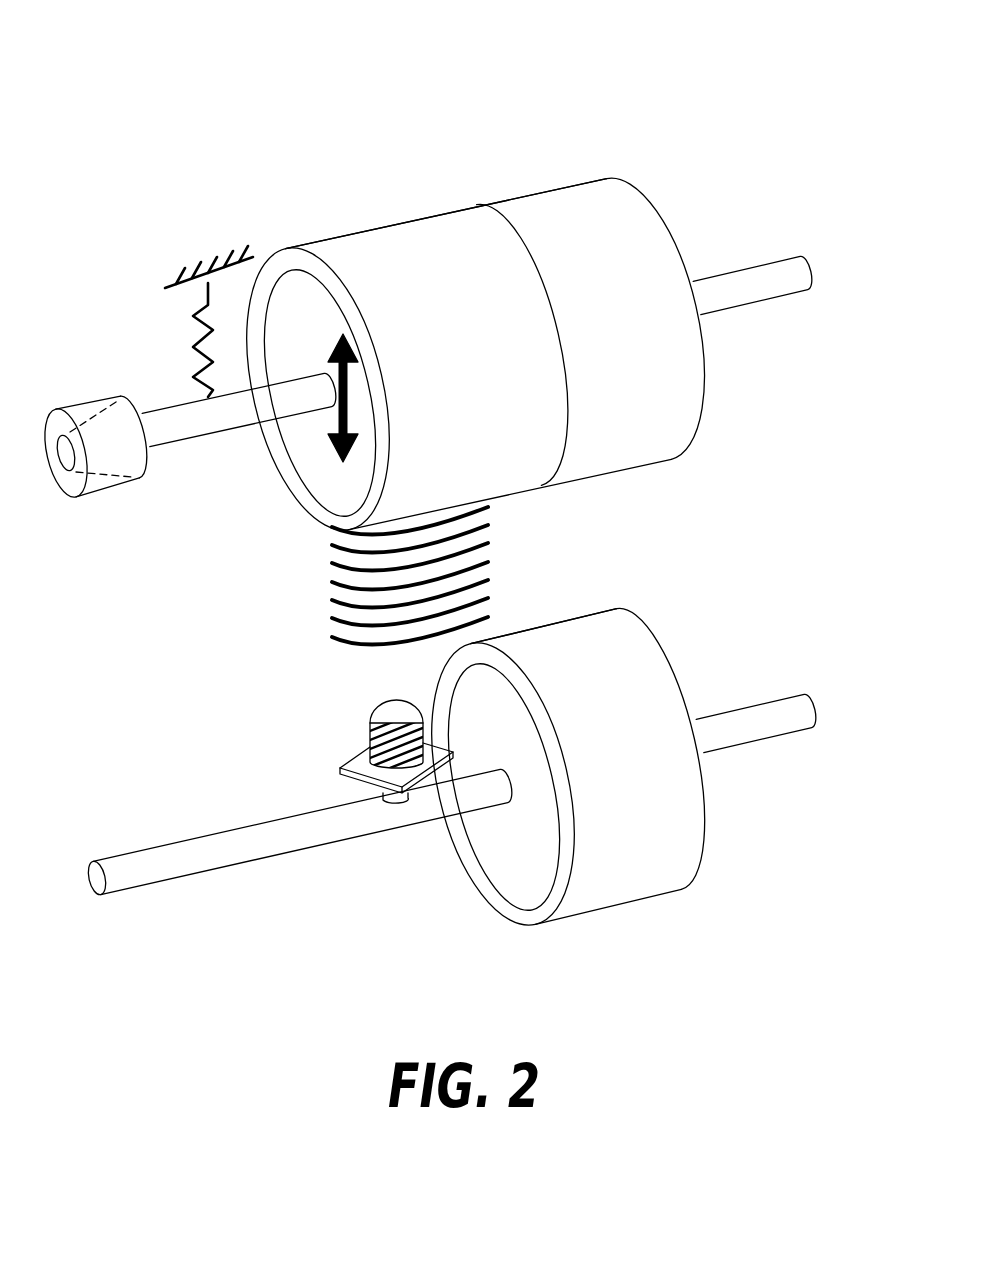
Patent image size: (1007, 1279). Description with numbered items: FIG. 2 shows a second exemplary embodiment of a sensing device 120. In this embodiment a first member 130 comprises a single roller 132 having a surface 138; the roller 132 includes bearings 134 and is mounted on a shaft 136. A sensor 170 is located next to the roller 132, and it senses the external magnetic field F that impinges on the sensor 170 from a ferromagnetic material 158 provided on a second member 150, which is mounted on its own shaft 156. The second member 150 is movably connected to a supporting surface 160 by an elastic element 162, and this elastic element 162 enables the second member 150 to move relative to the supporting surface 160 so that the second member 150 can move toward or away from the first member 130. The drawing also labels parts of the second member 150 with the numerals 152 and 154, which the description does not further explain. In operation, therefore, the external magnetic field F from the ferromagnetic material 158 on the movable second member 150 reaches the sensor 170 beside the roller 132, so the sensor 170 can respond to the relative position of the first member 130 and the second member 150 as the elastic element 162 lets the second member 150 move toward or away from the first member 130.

The device 120 is at (592, 106).
The first member 130 is at (777, 788).
The roller 132 is at (592, 620).
The bearings 134 is at (490, 855).
The shaft 136 is at (194, 847).
The surface 138 is at (620, 903).
The second member 150 is at (768, 377).
The drive magnet body 152 is at (698, 415).
The drive magnet inner surface 154 is at (312, 462).
The shaft 156 is at (180, 412).
The ferromagnetic material 158 is at (425, 238).
The supporting surface 160 is at (223, 257).
The elastic element 162 is at (198, 308).
The sensor 170 is at (366, 726).
The external magnetic field F is at (477, 551).